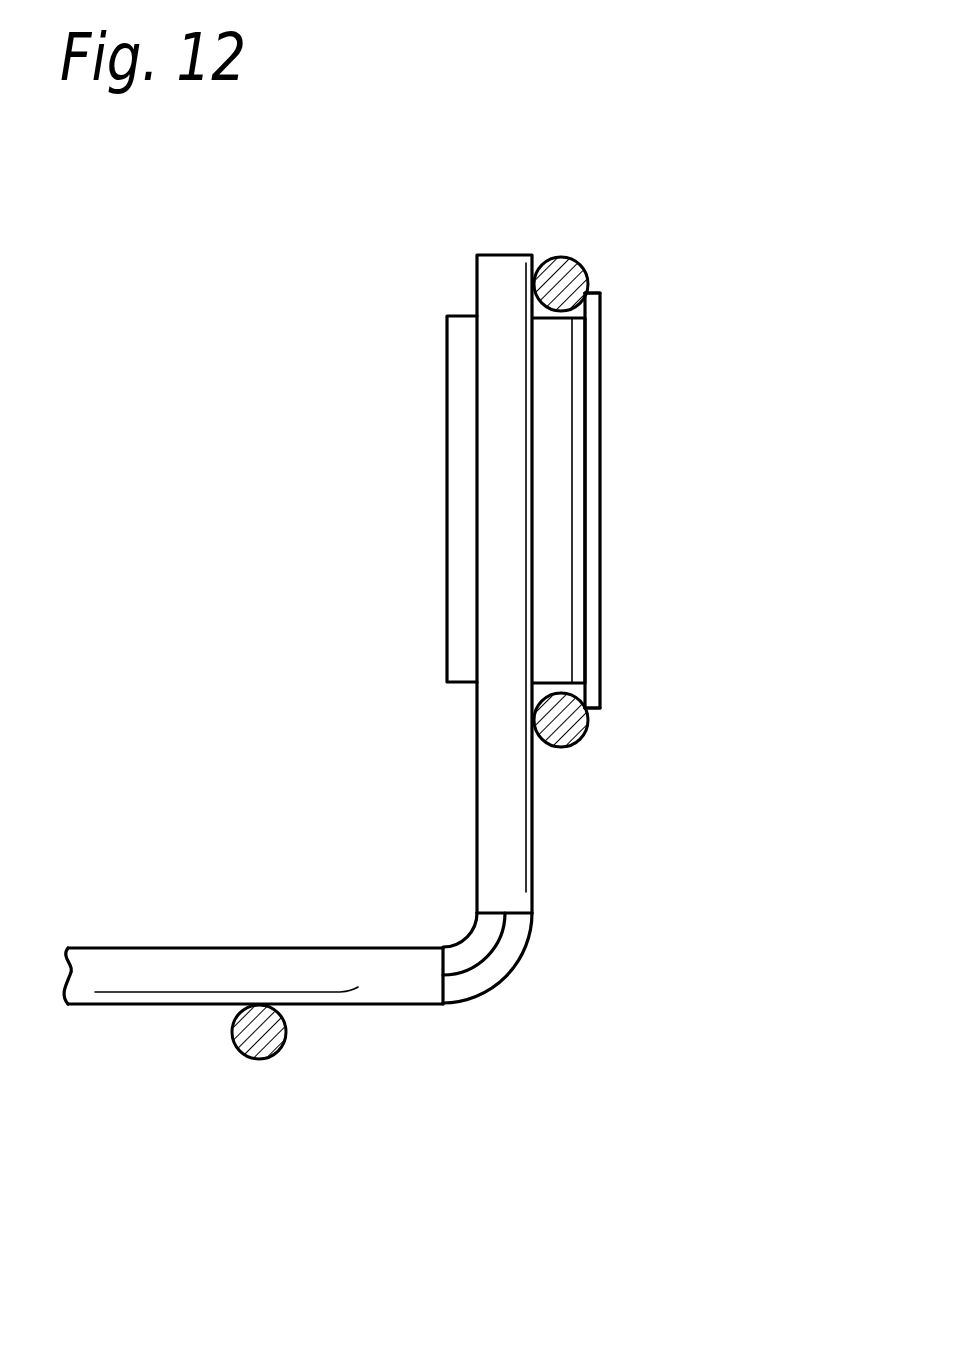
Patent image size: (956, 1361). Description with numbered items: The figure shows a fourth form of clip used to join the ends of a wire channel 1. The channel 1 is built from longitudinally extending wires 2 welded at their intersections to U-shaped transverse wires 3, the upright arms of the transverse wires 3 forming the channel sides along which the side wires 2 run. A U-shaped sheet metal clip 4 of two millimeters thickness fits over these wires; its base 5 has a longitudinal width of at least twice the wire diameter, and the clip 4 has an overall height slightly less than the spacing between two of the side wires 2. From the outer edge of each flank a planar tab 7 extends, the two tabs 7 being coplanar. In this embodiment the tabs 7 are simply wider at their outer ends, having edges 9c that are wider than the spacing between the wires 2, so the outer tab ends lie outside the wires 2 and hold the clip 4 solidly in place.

The wire channel 1 is at (115, 1065).
The longitudinally extending wire 2 is at (580, 263).
The U-shaped transverse wire 3 is at (337, 967).
The sheet metal clip 4 is at (550, 483).
The base 5 is at (463, 449).
The planar tab 7 is at (595, 547).
The edge 9c is at (598, 307).